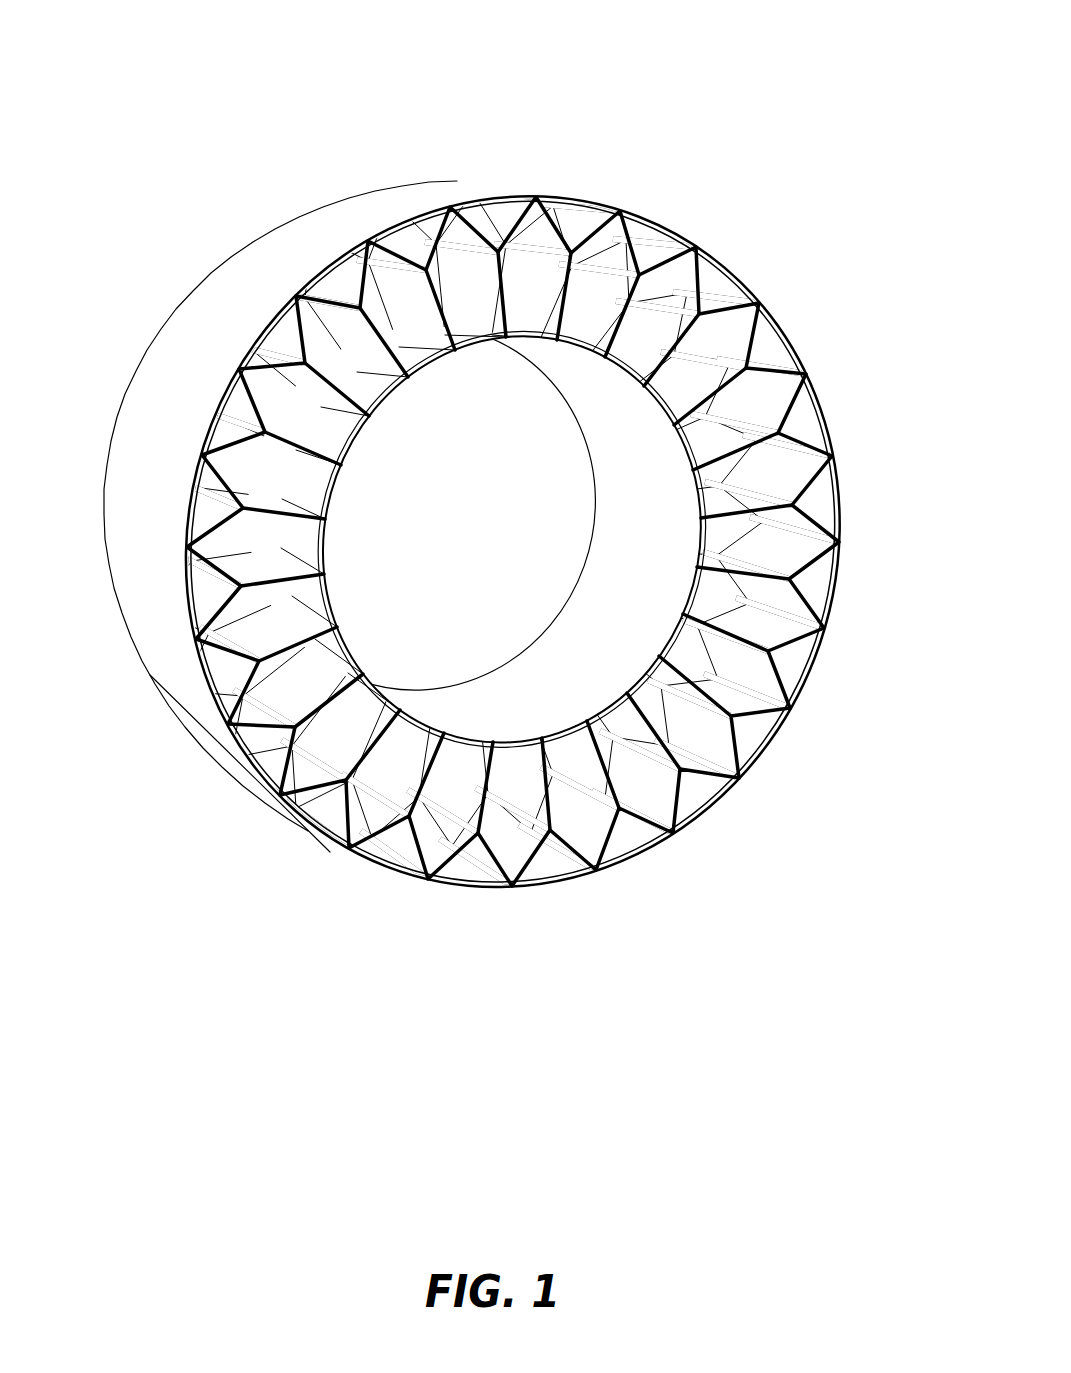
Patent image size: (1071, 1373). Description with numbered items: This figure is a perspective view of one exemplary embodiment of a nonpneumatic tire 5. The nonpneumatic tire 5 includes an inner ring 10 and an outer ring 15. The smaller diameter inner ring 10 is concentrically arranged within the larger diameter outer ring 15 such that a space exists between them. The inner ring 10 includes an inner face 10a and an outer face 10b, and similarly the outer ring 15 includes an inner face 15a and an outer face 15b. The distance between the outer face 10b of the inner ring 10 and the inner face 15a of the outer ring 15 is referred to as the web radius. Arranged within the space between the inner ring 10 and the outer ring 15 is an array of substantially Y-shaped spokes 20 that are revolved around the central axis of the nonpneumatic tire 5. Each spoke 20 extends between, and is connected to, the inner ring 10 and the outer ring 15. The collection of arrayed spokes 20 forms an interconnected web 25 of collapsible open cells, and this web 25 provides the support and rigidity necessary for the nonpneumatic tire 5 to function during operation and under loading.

The nonpneumatic tire 5 is at (212, 92).
The inner ring 10 is at (577, 426).
The inner face 10a is at (565, 629).
The outer face 10b is at (377, 384).
The outer ring 15 is at (783, 331).
The inner face 15a is at (626, 856).
The outer face 15b is at (132, 425).
The spokes 20 is at (749, 720).
The web 25 is at (828, 498).